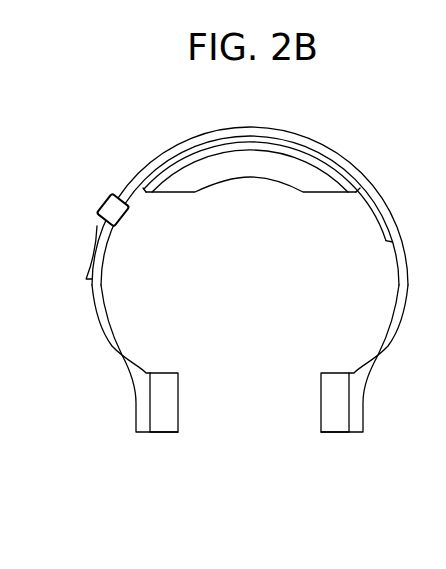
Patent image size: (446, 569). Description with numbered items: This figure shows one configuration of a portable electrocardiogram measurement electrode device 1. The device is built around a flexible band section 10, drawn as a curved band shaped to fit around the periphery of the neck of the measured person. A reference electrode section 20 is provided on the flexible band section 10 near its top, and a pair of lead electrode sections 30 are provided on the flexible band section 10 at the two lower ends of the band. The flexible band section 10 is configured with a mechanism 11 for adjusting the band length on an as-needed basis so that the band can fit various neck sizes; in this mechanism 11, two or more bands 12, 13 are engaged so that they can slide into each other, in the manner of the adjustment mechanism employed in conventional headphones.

The electrocardiogram measurement electrode device 1 is at (118, 164).
The flexible band section 10 is at (173, 145).
The mechanism for adjusting a band length 11 is at (312, 133).
The band 12 is at (338, 156).
The band 13 is at (348, 174).
The reference electrode section 20 is at (256, 167).
The lead electrode section 30 is at (167, 428).